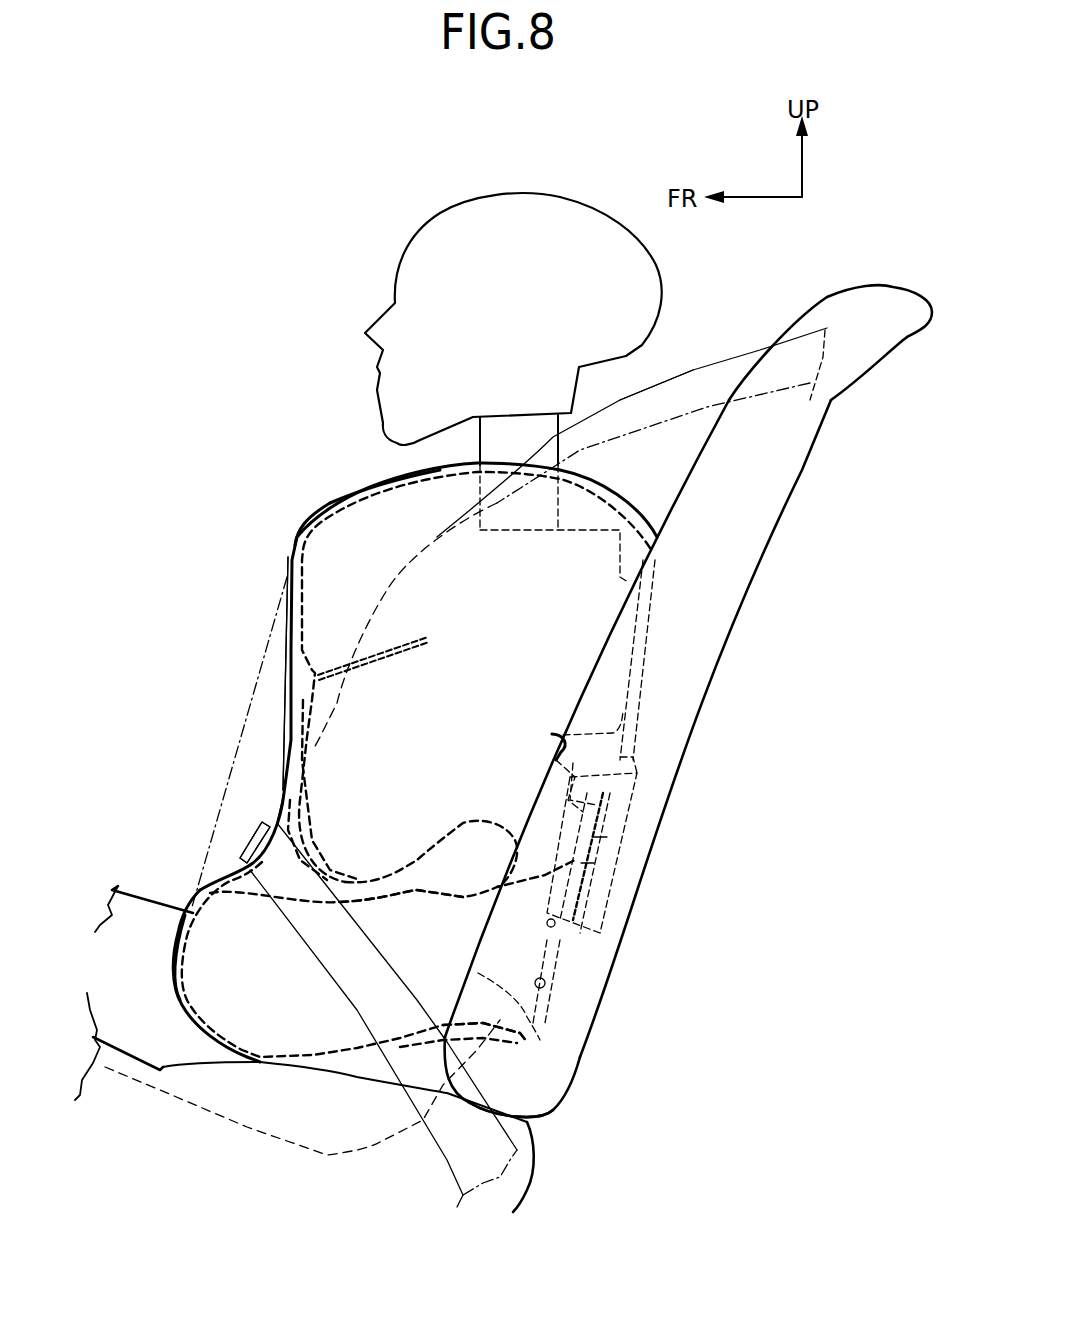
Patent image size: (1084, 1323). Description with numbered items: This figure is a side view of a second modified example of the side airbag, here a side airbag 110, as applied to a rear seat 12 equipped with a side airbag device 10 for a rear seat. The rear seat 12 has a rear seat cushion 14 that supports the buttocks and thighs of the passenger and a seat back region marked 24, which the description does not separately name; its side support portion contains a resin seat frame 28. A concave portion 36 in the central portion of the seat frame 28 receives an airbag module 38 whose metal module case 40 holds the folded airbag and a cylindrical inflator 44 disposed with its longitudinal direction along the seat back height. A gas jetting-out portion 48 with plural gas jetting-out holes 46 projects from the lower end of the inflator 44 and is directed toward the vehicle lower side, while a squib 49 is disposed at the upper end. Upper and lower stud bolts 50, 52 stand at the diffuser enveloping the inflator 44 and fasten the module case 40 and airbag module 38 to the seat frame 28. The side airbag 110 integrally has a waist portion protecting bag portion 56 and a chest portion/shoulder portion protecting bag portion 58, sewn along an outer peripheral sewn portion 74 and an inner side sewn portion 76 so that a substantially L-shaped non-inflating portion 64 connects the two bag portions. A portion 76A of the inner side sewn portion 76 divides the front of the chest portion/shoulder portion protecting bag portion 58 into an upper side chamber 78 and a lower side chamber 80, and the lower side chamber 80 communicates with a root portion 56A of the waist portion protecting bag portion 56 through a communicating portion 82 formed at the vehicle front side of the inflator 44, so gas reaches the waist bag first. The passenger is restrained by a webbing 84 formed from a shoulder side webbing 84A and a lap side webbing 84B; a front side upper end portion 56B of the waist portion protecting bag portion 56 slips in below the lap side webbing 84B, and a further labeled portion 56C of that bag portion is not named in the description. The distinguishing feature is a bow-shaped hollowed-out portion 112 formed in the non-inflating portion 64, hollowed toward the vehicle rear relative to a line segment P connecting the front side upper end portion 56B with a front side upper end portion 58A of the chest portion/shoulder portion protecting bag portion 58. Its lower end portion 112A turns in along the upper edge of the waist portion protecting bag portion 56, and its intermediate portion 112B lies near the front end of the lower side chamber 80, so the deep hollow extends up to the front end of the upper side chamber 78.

The side airbag device for a rear seat 10 is at (220, 620).
The rear seat 12 is at (806, 472).
The rear seat cushion 14 is at (110, 1043).
The seat back side portion (seat back 16) 24 is at (740, 575).
The seat frame 28 is at (555, 1068).
The concave portion 36 is at (563, 1003).
The airbag module 38 is at (645, 752).
The module case 40 is at (530, 1040).
The inflator 44 is at (615, 884).
The gas jetting-out holes 46 is at (590, 940).
The gas jetting-out portion 48 is at (567, 947).
The squib 49 is at (625, 808).
The stud bolt 50 is at (632, 853).
The stud bolt 52 is at (598, 918).
The waist portion protecting bag portion 56 is at (268, 1016).
The root portion of the waist portion protecting bag portion 56A is at (533, 1020).
The front side upper end portion of the waist portion protecting bag portion 56B is at (217, 910).
The front portion of lower chamber 56C is at (203, 977).
The chest portion/shoulder portion protecting bag portion 58 is at (322, 592).
The front side upper end portion of the chest portion/shoulder portion protecting ba 58A is at (327, 545).
The non-inflating portion 64 is at (460, 843).
The outer peripheral sewn portion 74 is at (258, 828).
The inner side sewn portion 76 is at (420, 860).
The portion of the inner side sewn portion 76A is at (407, 647).
The upper side chamber 78 is at (387, 503).
The lower side chamber 80 is at (343, 727).
The communicating portion 82 is at (520, 770).
The webbing 84 is at (742, 345).
The shoulder side webbing 84A is at (677, 375).
The lap side webbing 84B is at (443, 1160).
The side airbag 110 is at (322, 500).
The hollowed-out portion 112 is at (260, 823).
The lower end portion of the hollowed-out portion 112A is at (243, 860).
The intermediate portion of the hollowed-out portion 112B is at (280, 793).
The line segment P is at (300, 740).